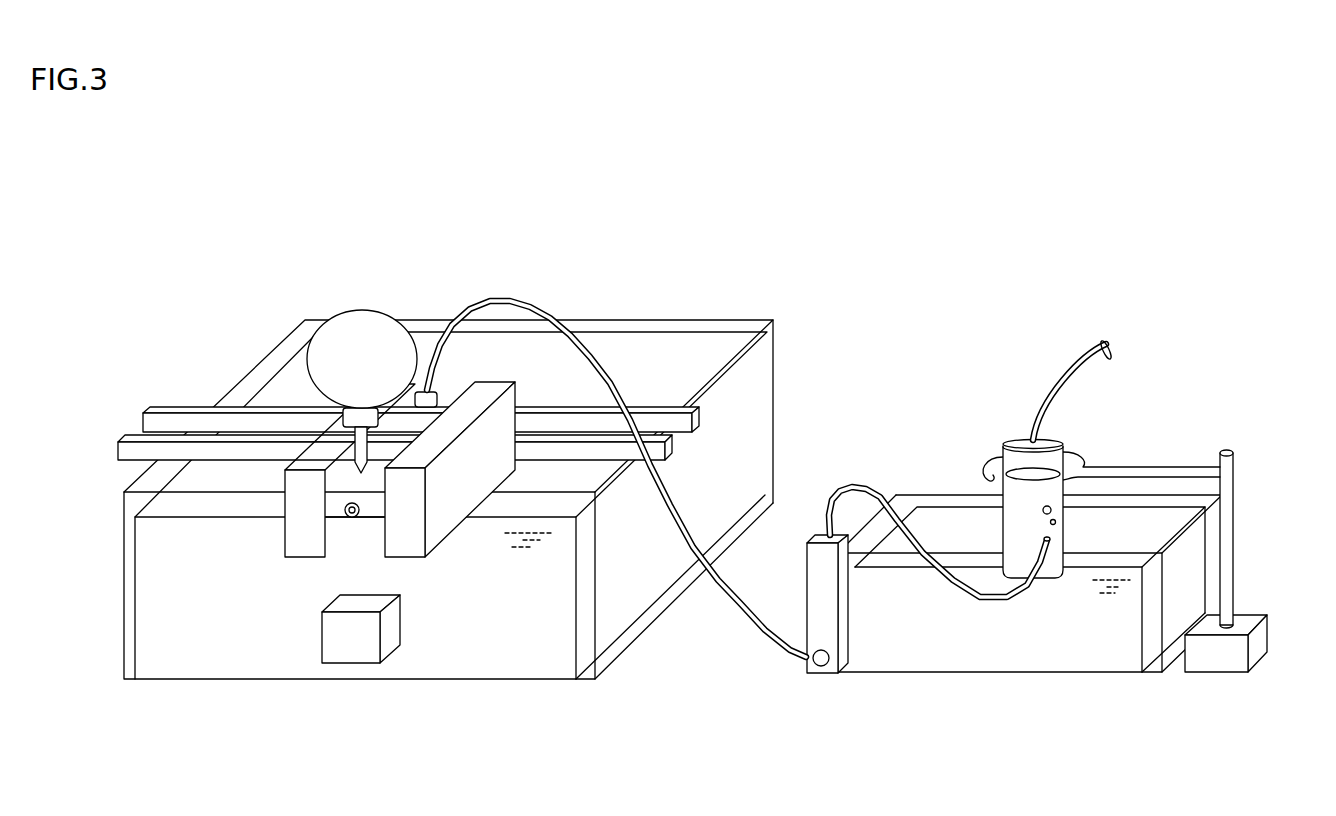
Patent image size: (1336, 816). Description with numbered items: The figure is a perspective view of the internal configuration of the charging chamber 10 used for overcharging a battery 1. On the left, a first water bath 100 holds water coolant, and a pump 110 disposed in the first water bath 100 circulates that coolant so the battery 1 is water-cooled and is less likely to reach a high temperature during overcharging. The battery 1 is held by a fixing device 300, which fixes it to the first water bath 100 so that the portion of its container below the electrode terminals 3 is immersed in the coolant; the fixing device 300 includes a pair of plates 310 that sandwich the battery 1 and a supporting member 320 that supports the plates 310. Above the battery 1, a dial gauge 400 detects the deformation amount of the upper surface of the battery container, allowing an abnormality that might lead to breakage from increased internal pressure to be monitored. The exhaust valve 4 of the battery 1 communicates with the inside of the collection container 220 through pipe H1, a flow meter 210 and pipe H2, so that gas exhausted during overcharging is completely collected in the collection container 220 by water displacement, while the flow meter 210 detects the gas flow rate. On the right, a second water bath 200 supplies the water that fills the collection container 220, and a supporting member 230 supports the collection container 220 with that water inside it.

The charging chamber 10 is at (768, 257).
The first water bath 100 is at (255, 363).
The fixing device 300 is at (375, 499).
The supporting member 320 is at (128, 432).
The plates 310 is at (402, 545).
The battery 1 is at (338, 527).
The electrode terminals 3 is at (345, 508).
The dial gauge 400 is at (357, 318).
The exhaust valve 4 is at (440, 387).
The pump 110 is at (348, 652).
The second water bath 200 is at (923, 493).
The flow meter 210 is at (804, 570).
The collection container 220 is at (1013, 440).
The supporting member 230 is at (1237, 502).
The pipe H1 is at (745, 625).
The pipe H2 is at (848, 488).